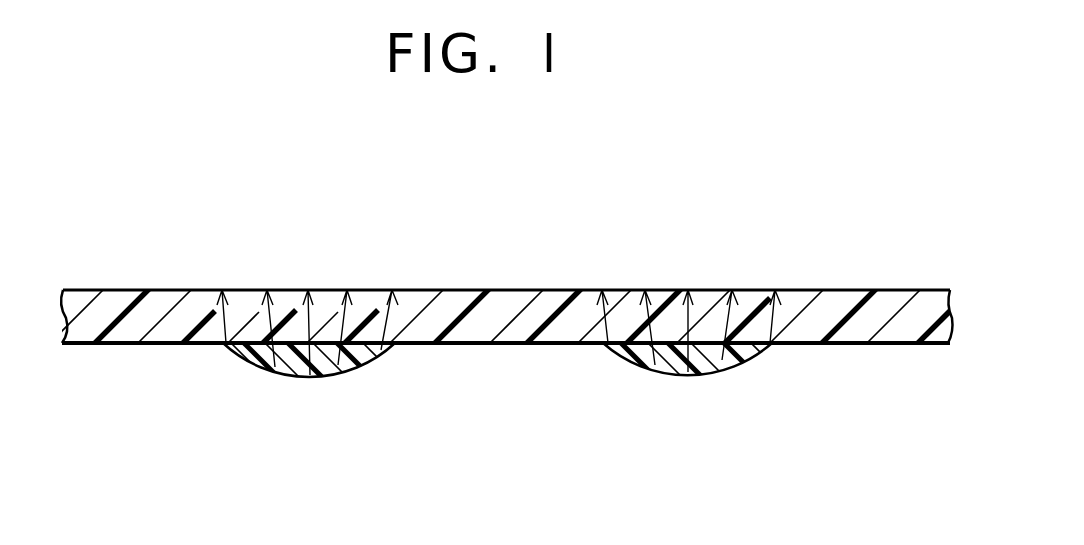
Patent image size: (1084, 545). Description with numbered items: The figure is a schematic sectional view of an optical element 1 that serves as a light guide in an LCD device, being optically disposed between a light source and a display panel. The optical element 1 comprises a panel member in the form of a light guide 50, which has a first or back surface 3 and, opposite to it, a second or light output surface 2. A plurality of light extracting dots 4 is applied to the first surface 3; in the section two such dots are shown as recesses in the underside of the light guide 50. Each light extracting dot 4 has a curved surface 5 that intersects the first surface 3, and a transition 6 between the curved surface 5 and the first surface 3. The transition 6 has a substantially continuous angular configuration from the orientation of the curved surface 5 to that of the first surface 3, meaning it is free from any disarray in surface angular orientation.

The optical element 1 is at (232, 246).
The light output surface 2 is at (518, 288).
The first surface 3 is at (509, 347).
The light extracting dot 4 is at (279, 408).
The curved surface 5 is at (332, 373).
The transition 6 is at (226, 343).
The light guide 50 is at (825, 302).